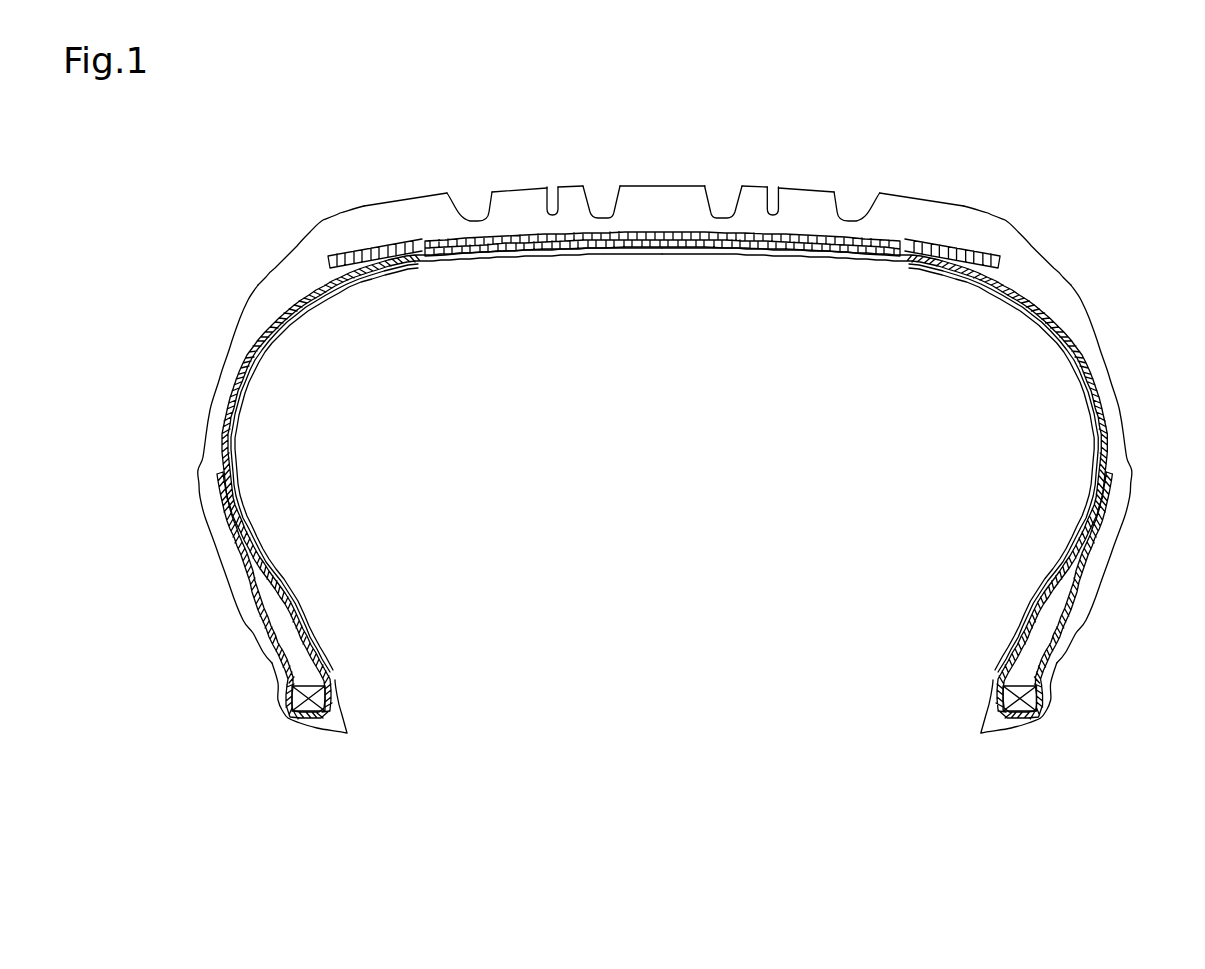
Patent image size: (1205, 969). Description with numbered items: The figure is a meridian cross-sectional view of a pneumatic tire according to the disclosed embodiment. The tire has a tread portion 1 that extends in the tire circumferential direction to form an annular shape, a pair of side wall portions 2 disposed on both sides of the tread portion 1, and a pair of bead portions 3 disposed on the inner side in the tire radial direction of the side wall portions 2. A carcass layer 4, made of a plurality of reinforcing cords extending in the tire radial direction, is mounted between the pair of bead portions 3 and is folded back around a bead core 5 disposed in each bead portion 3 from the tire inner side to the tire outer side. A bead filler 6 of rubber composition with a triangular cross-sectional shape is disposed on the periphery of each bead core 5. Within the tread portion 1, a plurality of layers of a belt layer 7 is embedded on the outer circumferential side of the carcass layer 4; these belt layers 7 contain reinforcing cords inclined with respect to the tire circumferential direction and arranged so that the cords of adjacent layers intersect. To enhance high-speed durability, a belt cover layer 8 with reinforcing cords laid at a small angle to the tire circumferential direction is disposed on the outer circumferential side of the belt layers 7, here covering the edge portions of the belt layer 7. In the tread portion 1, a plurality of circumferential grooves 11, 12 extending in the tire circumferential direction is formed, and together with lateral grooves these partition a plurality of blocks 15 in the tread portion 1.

The tread portion 1 is at (915, 186).
The side wall portions 2 is at (1130, 527).
The bead portions 3 is at (1057, 703).
The carcass layer 4 is at (1093, 380).
The bead core 5 is at (1003, 705).
The bead filler 6 is at (1020, 650).
The belt layer 7 is at (768, 256).
The belt cover layer 8 is at (942, 243).
The circumferential groove 11 is at (840, 207).
The circumferential groove 12 is at (769, 195).
The blocks 15 is at (895, 207).